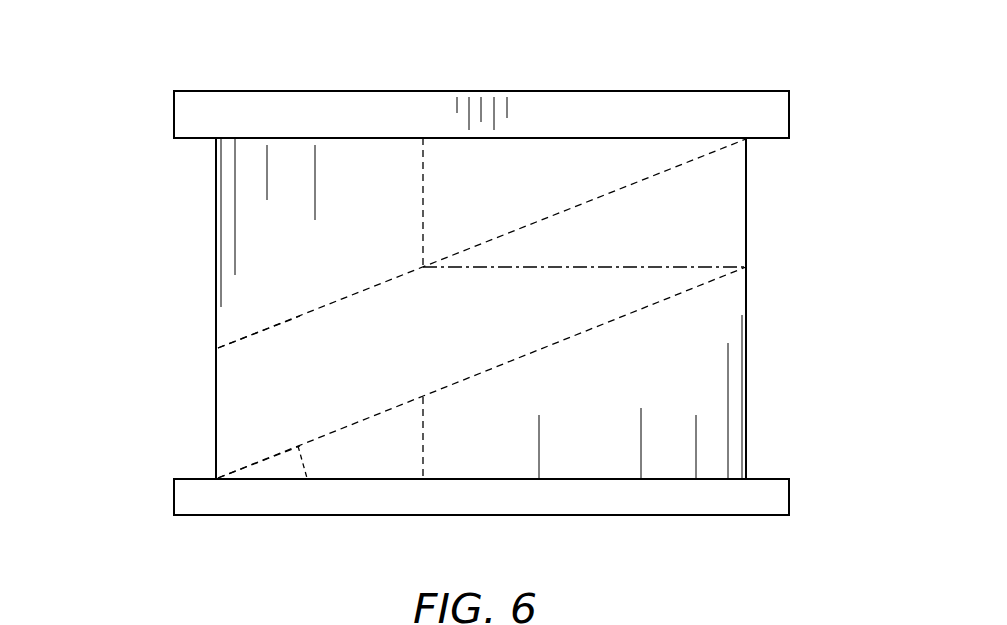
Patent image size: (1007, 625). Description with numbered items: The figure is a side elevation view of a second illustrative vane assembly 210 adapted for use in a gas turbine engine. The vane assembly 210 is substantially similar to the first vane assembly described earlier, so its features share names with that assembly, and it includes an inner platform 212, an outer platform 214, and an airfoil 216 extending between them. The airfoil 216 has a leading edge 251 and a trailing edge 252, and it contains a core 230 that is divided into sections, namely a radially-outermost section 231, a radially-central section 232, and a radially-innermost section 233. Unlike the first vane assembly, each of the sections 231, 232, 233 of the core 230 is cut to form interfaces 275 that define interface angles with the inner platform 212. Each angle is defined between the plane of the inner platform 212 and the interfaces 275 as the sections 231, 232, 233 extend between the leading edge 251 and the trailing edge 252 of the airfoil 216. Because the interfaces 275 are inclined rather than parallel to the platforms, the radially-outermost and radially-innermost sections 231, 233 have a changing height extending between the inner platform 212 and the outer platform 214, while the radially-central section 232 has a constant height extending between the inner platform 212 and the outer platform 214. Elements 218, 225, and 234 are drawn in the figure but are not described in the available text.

The vane assembly 210 is at (134, 105).
The inner platform 212 is at (763, 508).
The outer platform 214 is at (724, 120).
The airfoil 216 is at (178, 308).
The first side wall 218 is at (190, 300).
The centerline 225 is at (396, 180).
The core 230 is at (262, 234).
The radially-outermost section 231 is at (672, 153).
The radially-central section 232 is at (700, 261).
The radially-innermost section 233 is at (680, 380).
The second side wall 234 is at (226, 179).
The leading edge 251 is at (216, 310).
The trailing edge 252 is at (690, 308).
The interfaces 275 is at (258, 338).